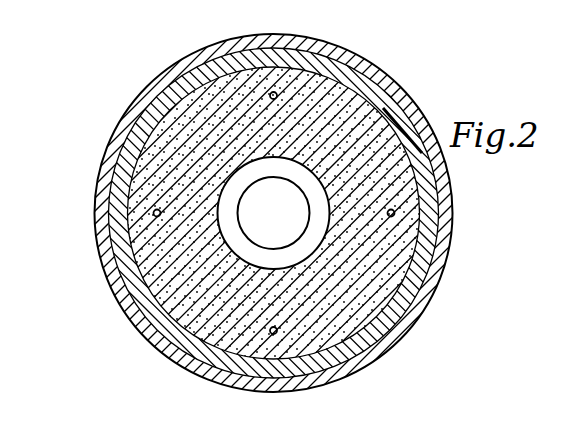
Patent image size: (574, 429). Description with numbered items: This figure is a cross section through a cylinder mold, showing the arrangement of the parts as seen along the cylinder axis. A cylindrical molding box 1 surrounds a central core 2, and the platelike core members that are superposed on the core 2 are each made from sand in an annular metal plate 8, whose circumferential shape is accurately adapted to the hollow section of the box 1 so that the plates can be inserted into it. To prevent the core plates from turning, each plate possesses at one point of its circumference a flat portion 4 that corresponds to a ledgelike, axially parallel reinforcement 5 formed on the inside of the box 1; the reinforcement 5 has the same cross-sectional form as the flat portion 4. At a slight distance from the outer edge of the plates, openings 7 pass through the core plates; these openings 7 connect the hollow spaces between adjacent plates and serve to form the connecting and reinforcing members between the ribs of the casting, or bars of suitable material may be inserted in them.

The cylindrical molding box 1 is at (102, 232).
The core 2 is at (165, 289).
The flat portion 4 is at (405, 123).
The ledgelike axially parallel reinforcement 5 is at (390, 80).
The openings 7 is at (394, 213).
The annular metal plate 8 is at (413, 272).